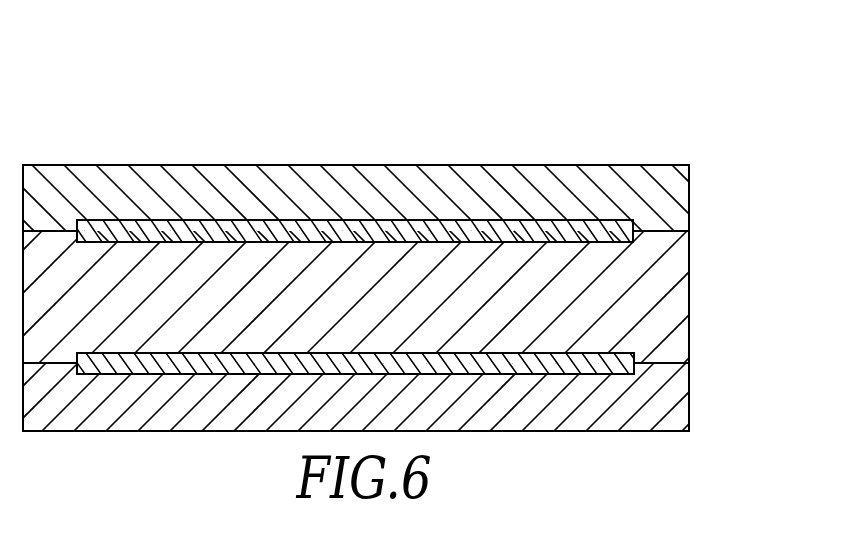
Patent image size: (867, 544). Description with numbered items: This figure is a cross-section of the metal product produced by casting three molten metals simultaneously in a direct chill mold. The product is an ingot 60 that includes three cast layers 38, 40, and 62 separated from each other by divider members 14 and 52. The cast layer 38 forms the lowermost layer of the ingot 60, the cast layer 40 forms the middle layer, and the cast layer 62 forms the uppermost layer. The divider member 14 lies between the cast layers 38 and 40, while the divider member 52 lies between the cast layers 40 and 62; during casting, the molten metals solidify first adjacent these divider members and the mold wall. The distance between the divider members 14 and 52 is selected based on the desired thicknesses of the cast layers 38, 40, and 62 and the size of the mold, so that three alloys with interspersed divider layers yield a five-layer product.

The ingot 60 is at (653, 138).
The cast layer 62 is at (689, 193).
The cast layer 40 is at (689, 293).
The cast layer 38 is at (689, 395).
The divider member 52 is at (547, 219).
The divider member 14 is at (615, 375).